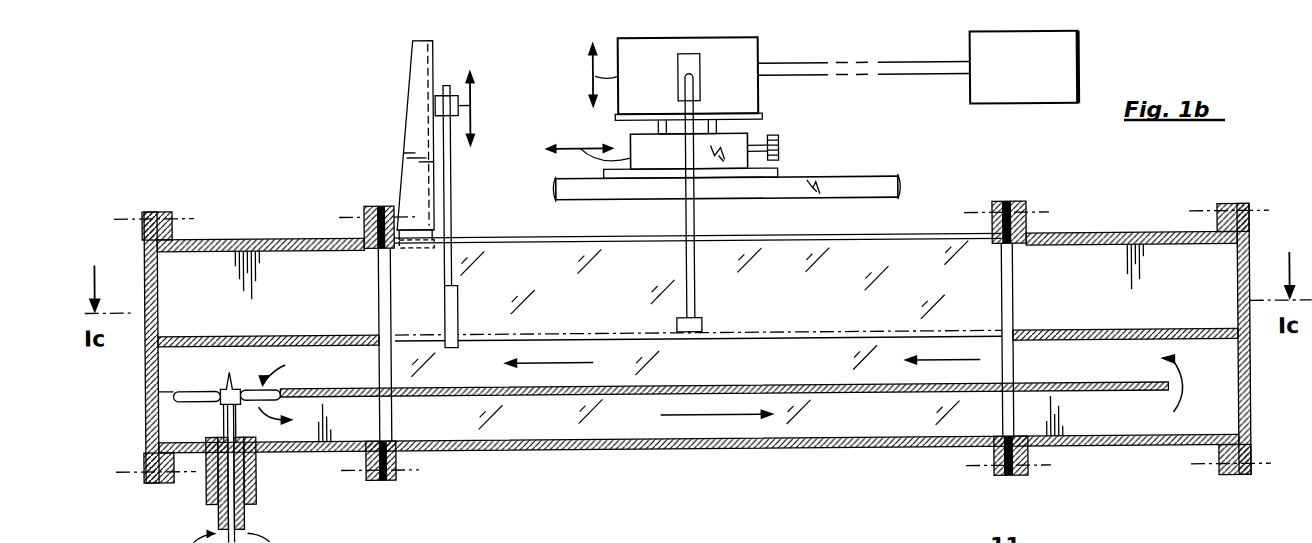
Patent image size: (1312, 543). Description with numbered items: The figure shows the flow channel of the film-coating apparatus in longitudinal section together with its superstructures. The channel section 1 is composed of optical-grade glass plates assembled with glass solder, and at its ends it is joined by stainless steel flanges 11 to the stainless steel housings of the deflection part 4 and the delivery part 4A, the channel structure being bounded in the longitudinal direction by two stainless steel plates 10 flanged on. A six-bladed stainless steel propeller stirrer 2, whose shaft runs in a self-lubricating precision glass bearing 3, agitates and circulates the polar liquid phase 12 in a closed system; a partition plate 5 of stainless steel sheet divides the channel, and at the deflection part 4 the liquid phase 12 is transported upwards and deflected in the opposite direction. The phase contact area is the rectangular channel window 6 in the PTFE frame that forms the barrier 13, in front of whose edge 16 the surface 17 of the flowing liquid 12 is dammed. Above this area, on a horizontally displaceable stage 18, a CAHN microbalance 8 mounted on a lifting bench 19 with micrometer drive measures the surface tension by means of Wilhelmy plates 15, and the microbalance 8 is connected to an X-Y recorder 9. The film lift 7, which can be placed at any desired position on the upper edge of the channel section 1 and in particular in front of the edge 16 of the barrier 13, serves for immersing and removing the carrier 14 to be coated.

The channel section 1 is at (813, 450).
The propeller stirrer 2 is at (222, 385).
The bearing 3 is at (248, 512).
The deflection part 4 is at (1138, 238).
The delivery part 4A is at (245, 230).
The partition plate 5 is at (822, 388).
The rectangular channel window 6 is at (770, 338).
The film lift 7 is at (405, 116).
The microbalance 8 is at (762, 50).
The X-Y recorder 9 is at (1080, 66).
The stainless steel plates 10 is at (145, 260).
The stainless steel flanges 11 is at (390, 484).
The liquid phase 12 is at (548, 366).
The barrier 13 is at (325, 337).
The carrier 14 is at (457, 303).
The Wilhelmy plates 15 is at (712, 323).
The edge of the barrier 16 is at (428, 337).
The surface of the flowing liquid 17 is at (614, 336).
The horizontally displaceable stage 18 is at (622, 205).
The lifting bench 19 is at (752, 140).